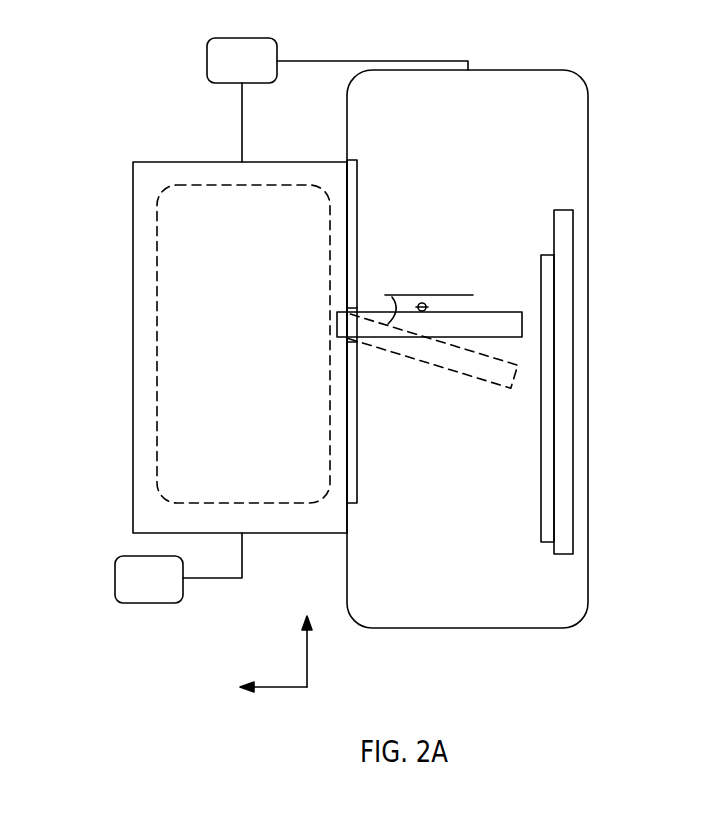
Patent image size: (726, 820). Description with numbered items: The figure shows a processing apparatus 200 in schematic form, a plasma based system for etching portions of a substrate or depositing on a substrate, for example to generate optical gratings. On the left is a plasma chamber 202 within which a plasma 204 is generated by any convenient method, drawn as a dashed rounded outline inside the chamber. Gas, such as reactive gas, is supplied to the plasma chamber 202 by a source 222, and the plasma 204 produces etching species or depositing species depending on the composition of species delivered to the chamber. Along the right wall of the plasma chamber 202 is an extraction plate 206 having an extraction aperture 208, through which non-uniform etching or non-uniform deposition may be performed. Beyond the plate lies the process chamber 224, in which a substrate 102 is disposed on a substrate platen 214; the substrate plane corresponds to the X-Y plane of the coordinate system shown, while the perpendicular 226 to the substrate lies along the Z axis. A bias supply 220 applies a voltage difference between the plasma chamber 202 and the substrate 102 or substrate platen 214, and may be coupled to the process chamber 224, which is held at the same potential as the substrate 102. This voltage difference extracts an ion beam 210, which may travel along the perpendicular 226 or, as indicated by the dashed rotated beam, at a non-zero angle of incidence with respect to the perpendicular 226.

The processing apparatus 200 is at (103, 56).
The plasma chamber 202 is at (196, 162).
The plasma 204 is at (167, 191).
The extraction plate 206 is at (372, 225).
The extraction aperture 208 is at (361, 306).
The ion beam 210 is at (375, 344).
The substrate platen 214 is at (560, 209).
The substrate 102 is at (548, 543).
The bias supply 220 is at (209, 65).
The source 222 is at (183, 597).
The process chamber 224 is at (537, 77).
The perpendicular 226 is at (448, 293).